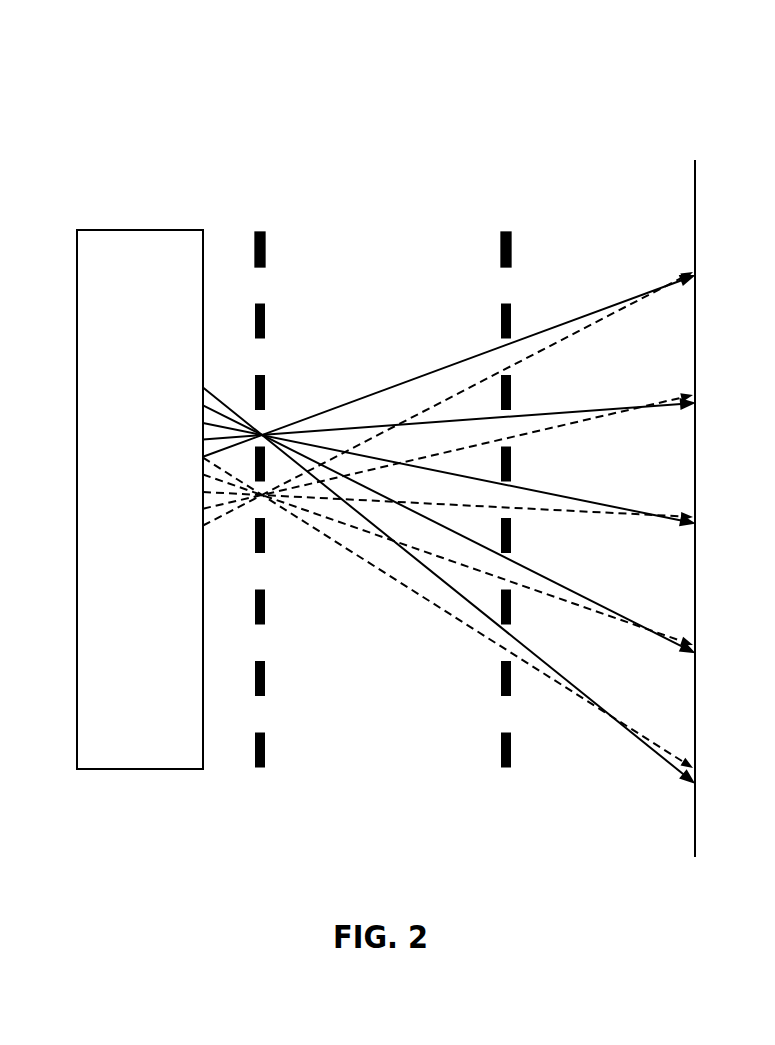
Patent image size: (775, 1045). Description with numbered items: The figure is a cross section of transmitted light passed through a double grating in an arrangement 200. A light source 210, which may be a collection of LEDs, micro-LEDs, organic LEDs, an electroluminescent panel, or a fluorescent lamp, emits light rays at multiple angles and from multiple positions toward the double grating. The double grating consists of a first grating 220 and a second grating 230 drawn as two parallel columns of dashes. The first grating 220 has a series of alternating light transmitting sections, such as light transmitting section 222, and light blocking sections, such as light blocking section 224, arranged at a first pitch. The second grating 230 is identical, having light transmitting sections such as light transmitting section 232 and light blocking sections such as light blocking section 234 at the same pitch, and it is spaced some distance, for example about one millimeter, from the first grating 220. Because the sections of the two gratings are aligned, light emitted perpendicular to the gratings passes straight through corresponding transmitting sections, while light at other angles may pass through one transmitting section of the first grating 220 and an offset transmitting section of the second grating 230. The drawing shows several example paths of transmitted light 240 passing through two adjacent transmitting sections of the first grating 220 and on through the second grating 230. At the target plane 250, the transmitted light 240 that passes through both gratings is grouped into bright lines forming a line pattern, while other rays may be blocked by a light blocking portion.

The optical system 200 is at (157, 68).
The light source 210 is at (140, 499).
The first grating 220 is at (290, 413).
The light transmitting section 222 is at (264, 286).
The light blocking section 224 is at (269, 251).
The second grating 230 is at (535, 412).
The light transmitting section 232 is at (508, 288).
The light blocking section 234 is at (514, 252).
The transmitted light 240 is at (446, 640).
The target plane 250 is at (692, 457).